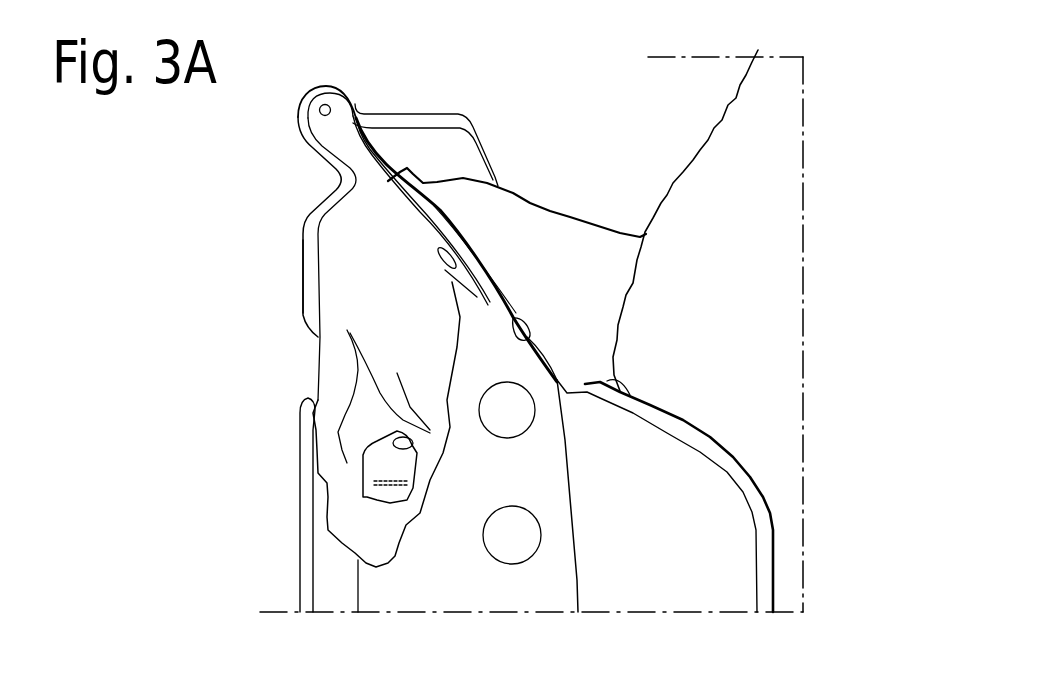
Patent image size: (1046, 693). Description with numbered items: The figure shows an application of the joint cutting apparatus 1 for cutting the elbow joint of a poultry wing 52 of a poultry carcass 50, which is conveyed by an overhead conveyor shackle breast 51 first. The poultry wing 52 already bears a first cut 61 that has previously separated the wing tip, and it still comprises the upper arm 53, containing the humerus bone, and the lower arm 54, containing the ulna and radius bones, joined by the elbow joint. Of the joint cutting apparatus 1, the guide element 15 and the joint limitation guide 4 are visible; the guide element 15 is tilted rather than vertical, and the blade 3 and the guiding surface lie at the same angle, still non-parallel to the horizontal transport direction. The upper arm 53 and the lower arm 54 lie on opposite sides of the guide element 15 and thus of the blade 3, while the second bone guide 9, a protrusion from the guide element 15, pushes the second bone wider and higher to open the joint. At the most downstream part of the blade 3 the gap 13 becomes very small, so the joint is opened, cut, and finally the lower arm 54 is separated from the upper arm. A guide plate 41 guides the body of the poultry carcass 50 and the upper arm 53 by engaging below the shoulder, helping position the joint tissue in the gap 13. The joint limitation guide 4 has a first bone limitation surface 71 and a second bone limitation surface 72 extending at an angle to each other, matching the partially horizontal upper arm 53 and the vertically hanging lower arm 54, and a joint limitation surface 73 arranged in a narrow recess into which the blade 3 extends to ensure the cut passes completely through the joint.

The joint cutting apparatus 1 is at (500, 178).
The blade 3 is at (355, 108).
The joint limitation guide 4 is at (310, 142).
The second bone guide 9 is at (446, 270).
The gap 13 is at (316, 96).
The guide element 15 is at (418, 204).
The guide plate 41 is at (763, 524).
The poultry carcass 50 is at (813, 111).
The breast 51 is at (760, 223).
The poultry wing 52 is at (547, 190).
The upper arm 53 is at (577, 237).
The lower arm 54 is at (331, 449).
The first cut 61 is at (393, 470).
The first bone limitation surface 71 is at (424, 163).
The second bone limitation surface 72 is at (334, 228).
The joint limitation surface 73 is at (325, 106).